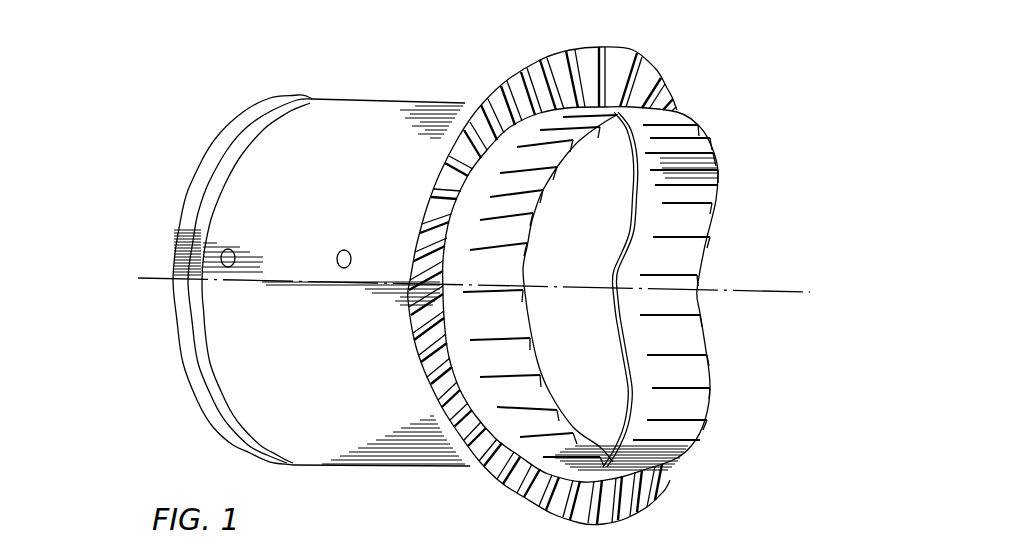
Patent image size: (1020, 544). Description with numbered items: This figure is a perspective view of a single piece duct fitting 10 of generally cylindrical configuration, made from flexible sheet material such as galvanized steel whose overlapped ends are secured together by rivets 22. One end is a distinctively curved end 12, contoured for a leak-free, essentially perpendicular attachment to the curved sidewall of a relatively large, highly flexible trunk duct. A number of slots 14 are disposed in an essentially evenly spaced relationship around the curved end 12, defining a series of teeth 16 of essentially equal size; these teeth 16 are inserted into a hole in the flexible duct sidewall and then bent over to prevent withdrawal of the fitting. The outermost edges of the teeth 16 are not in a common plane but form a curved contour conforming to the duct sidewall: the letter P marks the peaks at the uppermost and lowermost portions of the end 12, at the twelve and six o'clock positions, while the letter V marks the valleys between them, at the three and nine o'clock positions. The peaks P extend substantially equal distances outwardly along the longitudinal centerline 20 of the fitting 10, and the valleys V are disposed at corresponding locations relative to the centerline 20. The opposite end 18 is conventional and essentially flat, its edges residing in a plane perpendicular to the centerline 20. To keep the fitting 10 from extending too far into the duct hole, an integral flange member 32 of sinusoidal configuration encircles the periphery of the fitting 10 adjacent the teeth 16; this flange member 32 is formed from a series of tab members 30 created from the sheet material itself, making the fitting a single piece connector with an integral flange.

The single piece duct fitting 10 is at (347, 67).
The curved end 12 is at (766, 432).
The slots 14 is at (697, 317).
The teeth 16 is at (698, 218).
The opposite end 18 is at (178, 223).
The longitudinal centerline 20 is at (471, 284).
The rivets 22 is at (343, 252).
The tab members 30 is at (543, 66).
The flange member 32 is at (634, 52).
The peaks P is at (677, 110).
The valleys V is at (698, 290).